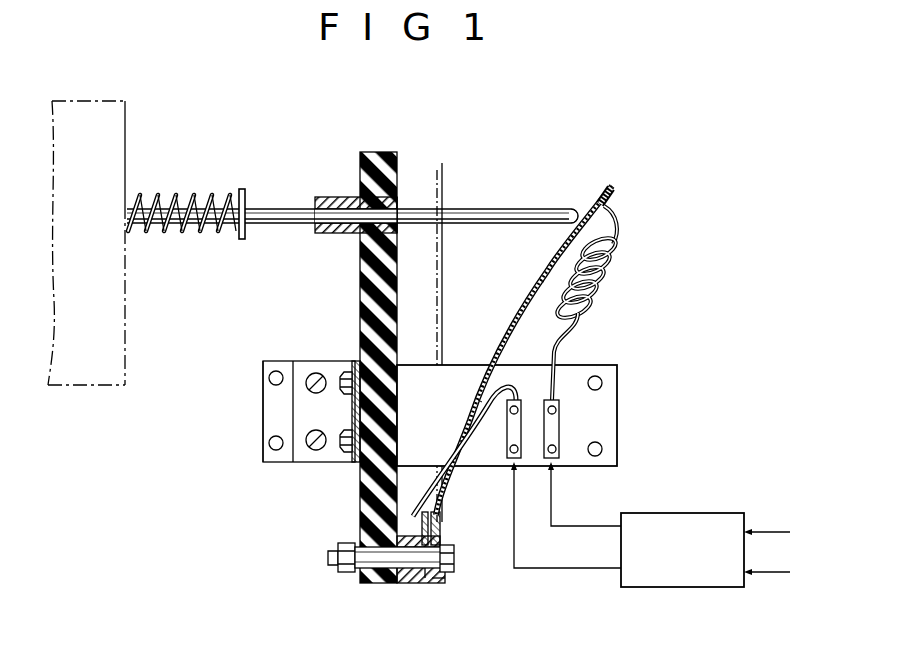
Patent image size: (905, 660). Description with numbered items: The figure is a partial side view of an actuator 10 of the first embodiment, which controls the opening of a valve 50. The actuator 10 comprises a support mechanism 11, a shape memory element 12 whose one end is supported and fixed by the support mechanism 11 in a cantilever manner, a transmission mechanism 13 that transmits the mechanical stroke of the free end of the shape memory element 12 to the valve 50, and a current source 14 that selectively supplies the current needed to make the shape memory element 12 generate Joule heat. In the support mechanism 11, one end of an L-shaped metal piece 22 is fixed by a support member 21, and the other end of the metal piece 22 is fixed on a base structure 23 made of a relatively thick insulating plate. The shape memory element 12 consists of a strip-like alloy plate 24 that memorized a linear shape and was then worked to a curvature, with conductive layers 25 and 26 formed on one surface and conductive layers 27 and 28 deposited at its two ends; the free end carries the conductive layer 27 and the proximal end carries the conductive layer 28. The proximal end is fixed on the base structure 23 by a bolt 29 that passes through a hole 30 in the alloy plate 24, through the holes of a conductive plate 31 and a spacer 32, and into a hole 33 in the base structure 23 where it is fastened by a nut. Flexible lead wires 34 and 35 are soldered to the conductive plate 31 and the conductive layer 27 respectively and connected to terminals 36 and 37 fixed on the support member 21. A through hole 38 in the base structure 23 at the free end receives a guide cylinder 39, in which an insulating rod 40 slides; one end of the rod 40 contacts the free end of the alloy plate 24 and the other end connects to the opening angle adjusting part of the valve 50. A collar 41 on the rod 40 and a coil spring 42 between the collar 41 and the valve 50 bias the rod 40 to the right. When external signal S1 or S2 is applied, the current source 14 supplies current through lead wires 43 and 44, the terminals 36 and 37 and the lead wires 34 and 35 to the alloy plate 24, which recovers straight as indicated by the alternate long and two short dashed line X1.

The actuator 10 is at (577, 162).
The support mechanism 11 is at (336, 350).
The shape memory element 12 is at (508, 305).
The transmission mechanism 13 is at (284, 197).
The current source 14 is at (690, 512).
The support member 21 is at (263, 405).
The L-shaped metal piece 22 is at (313, 462).
The base structure 23 is at (358, 270).
The alloy plate 24 is at (545, 265).
The conductive layer 25 is at (538, 306).
The conductive layer 26 is at (485, 382).
The conductive layer 27 is at (597, 192).
The conductive layer 28 is at (444, 522).
The bolt 29 is at (455, 560).
The hole 30 is at (441, 584).
The conductive plate 31 is at (426, 579).
The spacer 32 is at (396, 584).
The hole 33 is at (342, 574).
The flexible lead wire 34 is at (455, 476).
The flexible lead wire 35 is at (598, 298).
The terminal 36 is at (528, 450).
The terminal 37 is at (570, 450).
The through hole 38 is at (388, 197).
The guide cylinder 39 is at (331, 197).
The insulating rod 40 is at (518, 209).
The collar 41 is at (244, 190).
The coil spring 42 is at (165, 232).
The lead wire 43 is at (548, 572).
The lead wire 44 is at (570, 528).
The valve 50 is at (112, 100).
The alternate long and two short dashed line X1 is at (445, 171).
The external signal S1 is at (780, 516).
The external signal S2 is at (780, 556).